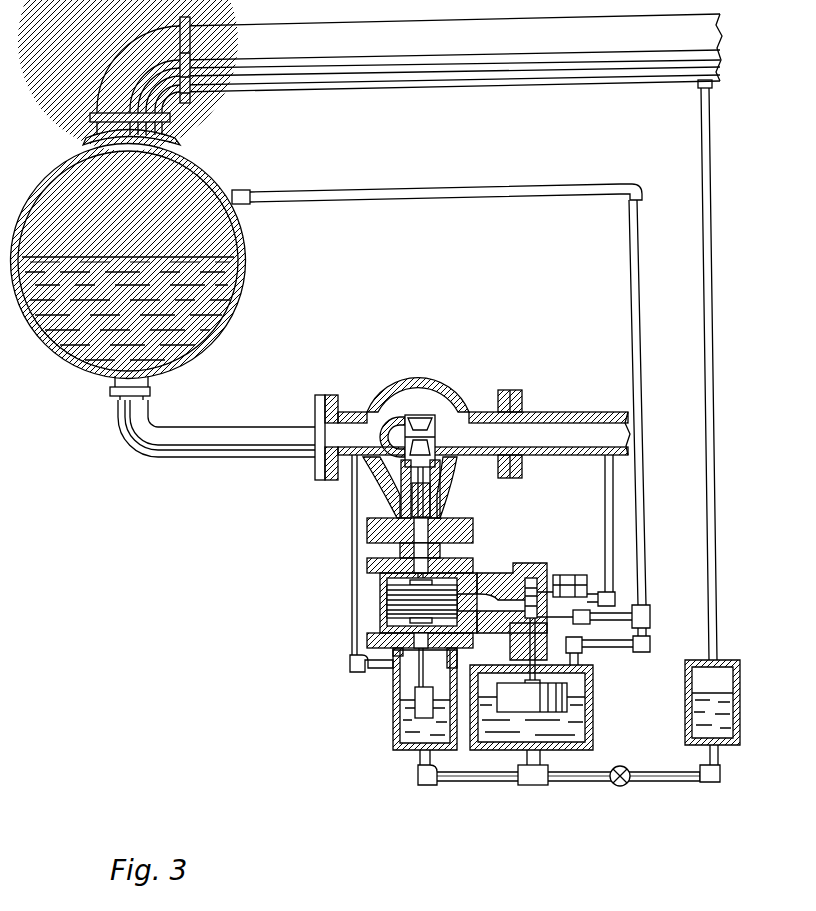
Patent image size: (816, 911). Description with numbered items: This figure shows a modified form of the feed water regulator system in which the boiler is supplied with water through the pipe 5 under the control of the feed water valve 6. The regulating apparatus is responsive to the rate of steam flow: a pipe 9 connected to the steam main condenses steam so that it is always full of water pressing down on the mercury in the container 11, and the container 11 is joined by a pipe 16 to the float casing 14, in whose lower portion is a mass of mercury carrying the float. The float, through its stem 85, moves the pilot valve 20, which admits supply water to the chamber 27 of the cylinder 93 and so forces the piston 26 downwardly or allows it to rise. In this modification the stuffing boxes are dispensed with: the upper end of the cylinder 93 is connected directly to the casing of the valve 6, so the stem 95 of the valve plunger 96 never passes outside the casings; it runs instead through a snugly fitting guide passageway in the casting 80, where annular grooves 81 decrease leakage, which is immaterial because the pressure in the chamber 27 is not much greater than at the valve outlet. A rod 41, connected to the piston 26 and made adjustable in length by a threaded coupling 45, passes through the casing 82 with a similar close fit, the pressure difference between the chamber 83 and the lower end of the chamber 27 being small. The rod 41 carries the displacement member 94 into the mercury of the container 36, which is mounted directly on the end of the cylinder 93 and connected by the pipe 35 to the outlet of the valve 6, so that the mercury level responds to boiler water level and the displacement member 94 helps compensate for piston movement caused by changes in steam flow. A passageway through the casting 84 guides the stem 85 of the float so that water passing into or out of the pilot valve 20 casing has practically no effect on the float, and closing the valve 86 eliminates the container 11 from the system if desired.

The feed water pipe 5 is at (265, 428).
The feed water valve 6 is at (445, 385).
The valve plunger 96 is at (440, 415).
The annular grooves 81 is at (383, 530).
The coupling 45 is at (432, 500).
The pilot valve 20 is at (545, 578).
The pipe 35 is at (370, 533).
The stem 95 is at (440, 548).
The casting 80 is at (367, 565).
The chamber 27 is at (400, 583).
The piston 26 is at (431, 580).
The cylinder 93 is at (385, 600).
The casing 82 is at (370, 636).
The chamber 83 is at (457, 665).
The stem of the float 85 is at (560, 590).
The rod 41 is at (417, 675).
The container 36 is at (395, 720).
The displacement member 94 is at (415, 715).
The float casing 14 is at (500, 750).
The casting 84 is at (593, 680).
The container 11 is at (686, 705).
The pipe 9 is at (704, 426).
The pipe 16 is at (672, 782).
The valve 86 is at (617, 786).